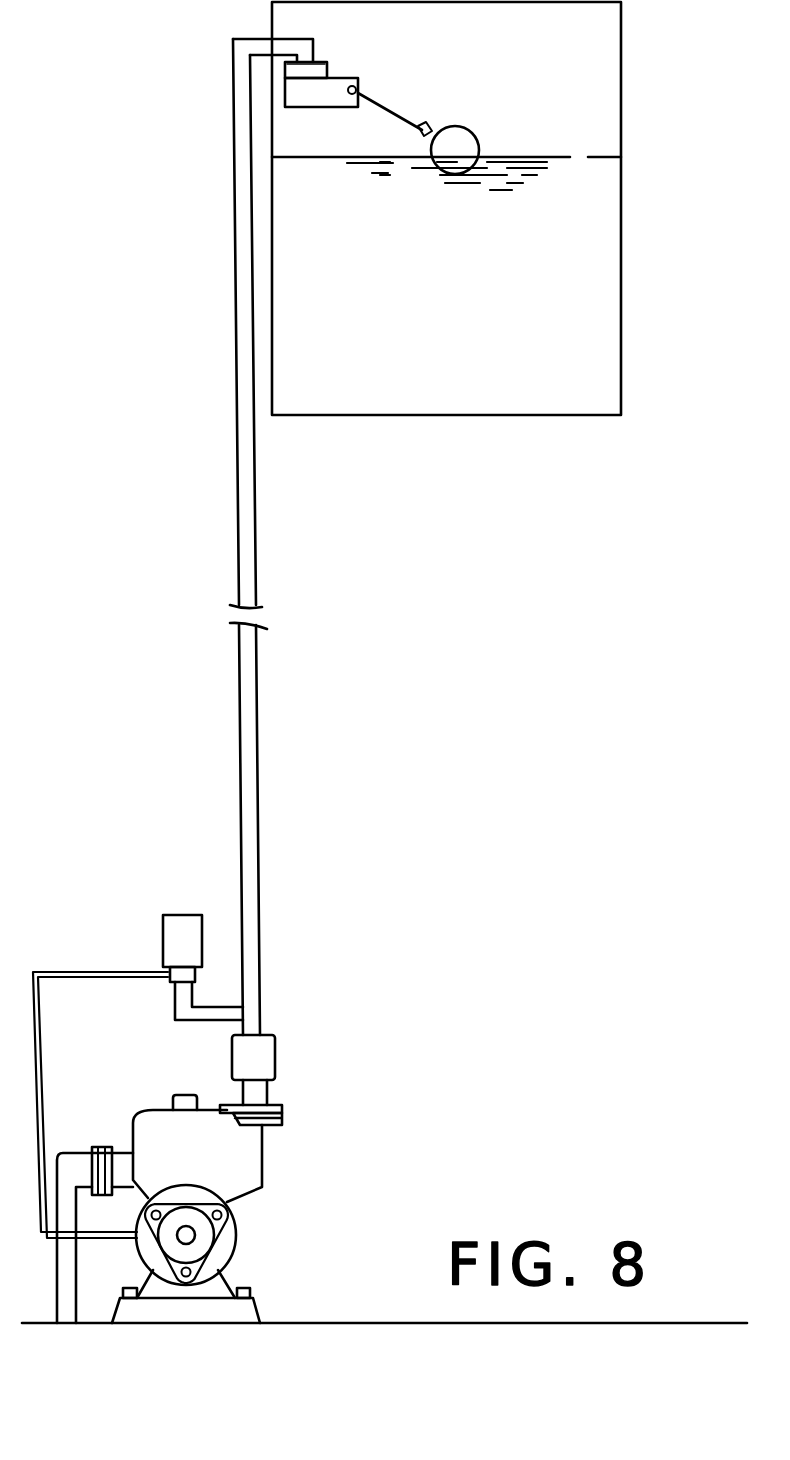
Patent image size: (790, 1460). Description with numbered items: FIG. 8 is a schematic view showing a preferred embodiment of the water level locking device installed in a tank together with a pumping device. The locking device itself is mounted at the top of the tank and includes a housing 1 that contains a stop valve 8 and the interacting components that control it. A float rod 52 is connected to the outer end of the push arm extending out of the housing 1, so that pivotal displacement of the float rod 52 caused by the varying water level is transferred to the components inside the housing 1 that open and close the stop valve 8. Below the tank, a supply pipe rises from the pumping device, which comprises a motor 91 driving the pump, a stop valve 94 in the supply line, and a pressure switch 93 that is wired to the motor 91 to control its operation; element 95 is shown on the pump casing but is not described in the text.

The housing 1 is at (342, 80).
The stop valve 8 is at (317, 72).
The float rod 52 is at (385, 108).
The pressure switch 93 is at (175, 932).
The stop valve 94 is at (275, 1055).
The pump casing with discharge 95 is at (262, 1163).
The motor 91 is at (217, 1247).